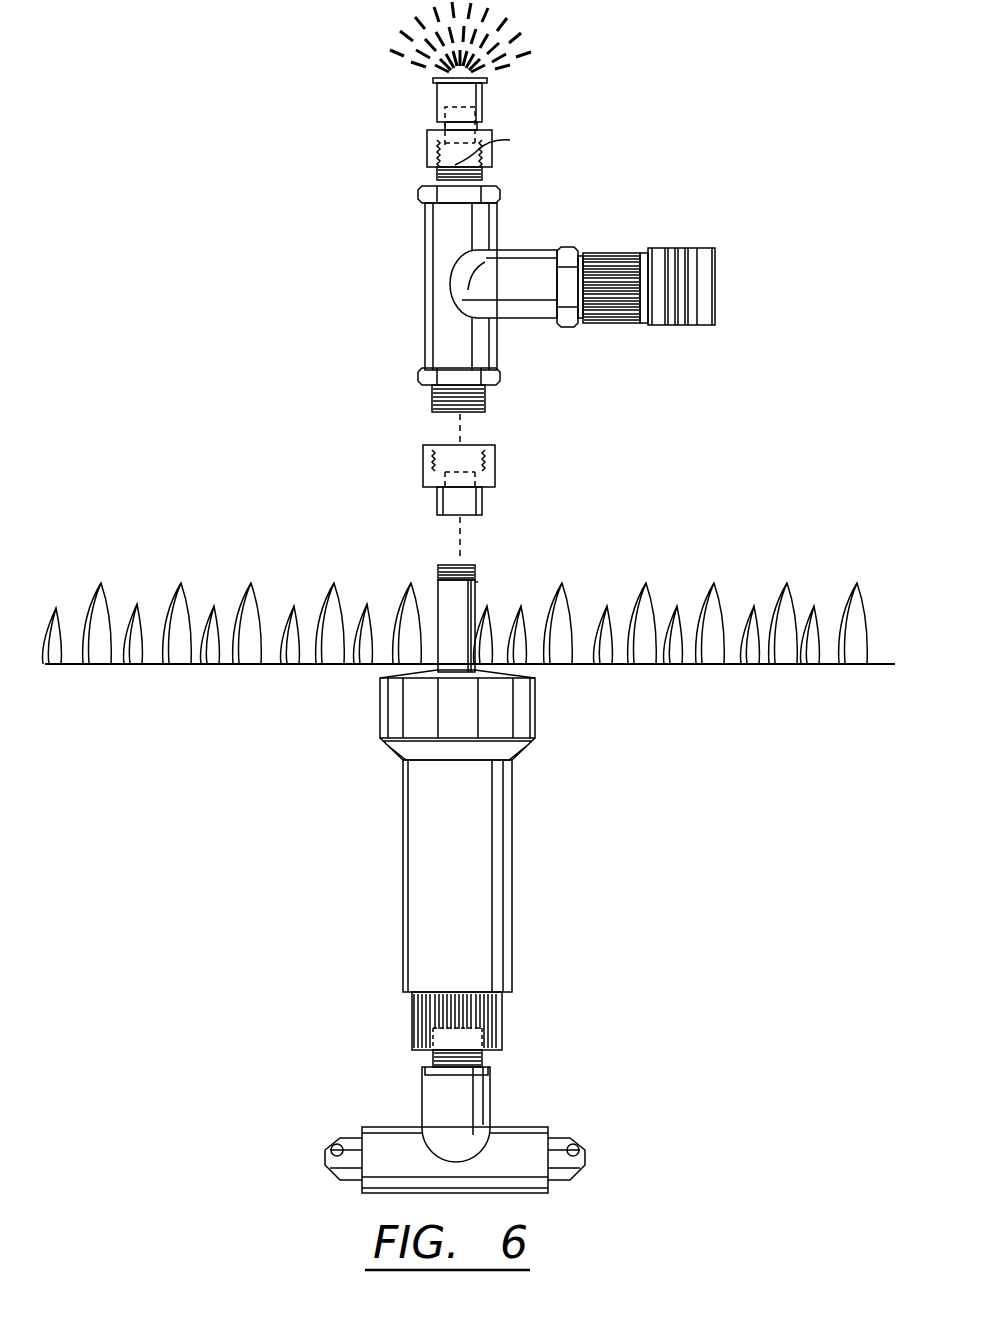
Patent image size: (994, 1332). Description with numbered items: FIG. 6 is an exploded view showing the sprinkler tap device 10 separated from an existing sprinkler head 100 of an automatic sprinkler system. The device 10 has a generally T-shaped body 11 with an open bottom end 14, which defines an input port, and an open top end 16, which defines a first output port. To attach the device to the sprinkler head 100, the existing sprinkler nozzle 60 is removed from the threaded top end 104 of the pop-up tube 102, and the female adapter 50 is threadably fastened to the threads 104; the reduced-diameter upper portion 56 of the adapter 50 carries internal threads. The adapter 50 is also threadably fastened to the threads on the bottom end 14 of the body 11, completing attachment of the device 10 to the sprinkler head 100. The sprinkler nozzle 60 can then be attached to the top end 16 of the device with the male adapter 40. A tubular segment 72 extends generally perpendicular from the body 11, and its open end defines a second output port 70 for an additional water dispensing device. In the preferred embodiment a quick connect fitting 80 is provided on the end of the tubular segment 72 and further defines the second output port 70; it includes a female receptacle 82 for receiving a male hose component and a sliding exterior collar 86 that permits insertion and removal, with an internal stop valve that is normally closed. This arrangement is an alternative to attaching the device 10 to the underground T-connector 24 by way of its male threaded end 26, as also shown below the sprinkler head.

The sprinkler tap device 10 is at (556, 200).
The T-shaped body 11 is at (408, 297).
The bottom end 14 is at (445, 408).
The top end 16 is at (505, 142).
The T-connector 24 is at (500, 1096).
The male threaded end 26 is at (430, 1058).
The male adapter 40 is at (417, 150).
The female adapter 50 is at (412, 472).
The upper portion 56 is at (482, 505).
The sprinkler nozzle 60 is at (427, 95).
The second output port 70 is at (690, 272).
The tubular segment 72 is at (544, 248).
The quick connect fitting 80 is at (707, 240).
The female receptacle 82 is at (717, 308).
The exterior collar 86 is at (688, 327).
The sprinkler head 100 is at (418, 831).
The pop-up tube 102 is at (438, 599).
The threaded top end 104 is at (478, 582).